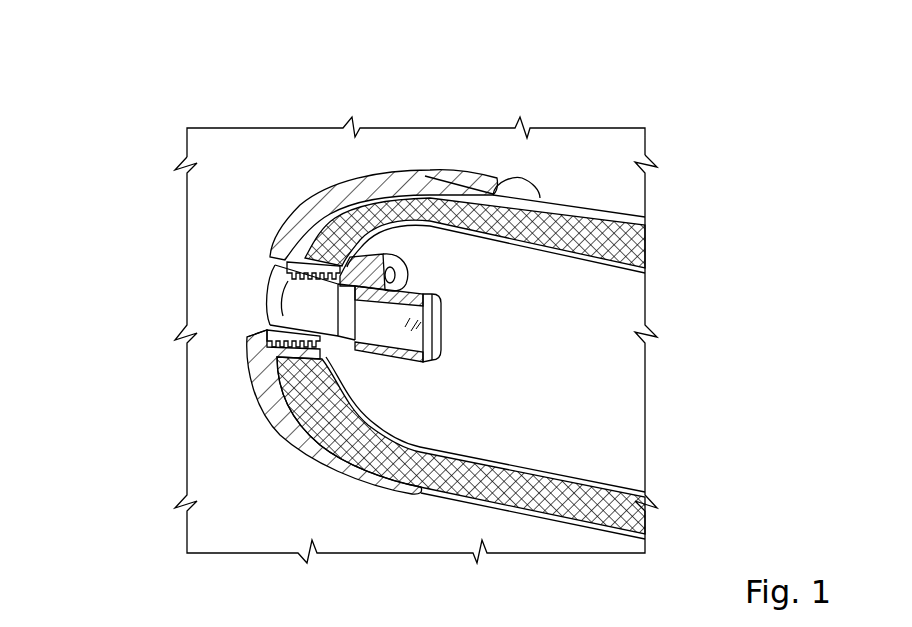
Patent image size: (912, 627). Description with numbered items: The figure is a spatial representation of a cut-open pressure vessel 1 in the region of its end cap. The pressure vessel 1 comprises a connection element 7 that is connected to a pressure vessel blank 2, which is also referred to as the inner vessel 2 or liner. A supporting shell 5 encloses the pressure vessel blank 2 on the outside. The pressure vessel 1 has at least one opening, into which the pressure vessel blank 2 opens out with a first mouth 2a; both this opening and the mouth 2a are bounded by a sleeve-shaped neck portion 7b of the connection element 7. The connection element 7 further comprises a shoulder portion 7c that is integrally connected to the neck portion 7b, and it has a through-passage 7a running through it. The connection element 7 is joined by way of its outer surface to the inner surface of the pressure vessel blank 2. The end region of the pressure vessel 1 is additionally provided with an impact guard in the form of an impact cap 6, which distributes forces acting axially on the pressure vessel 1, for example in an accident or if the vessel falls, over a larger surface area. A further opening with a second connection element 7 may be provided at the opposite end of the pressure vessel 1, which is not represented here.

The pressure vessel 1 is at (172, 209).
The pressure vessel blank 2 is at (645, 268).
The first mouth 2a is at (266, 292).
The supporting shell 5 is at (645, 252).
The impact cap 6 is at (303, 223).
The connection element 7 is at (369, 280).
The through-passage 7a is at (303, 318).
The neck portion 7b is at (262, 367).
The shoulder portion 7c is at (272, 423).